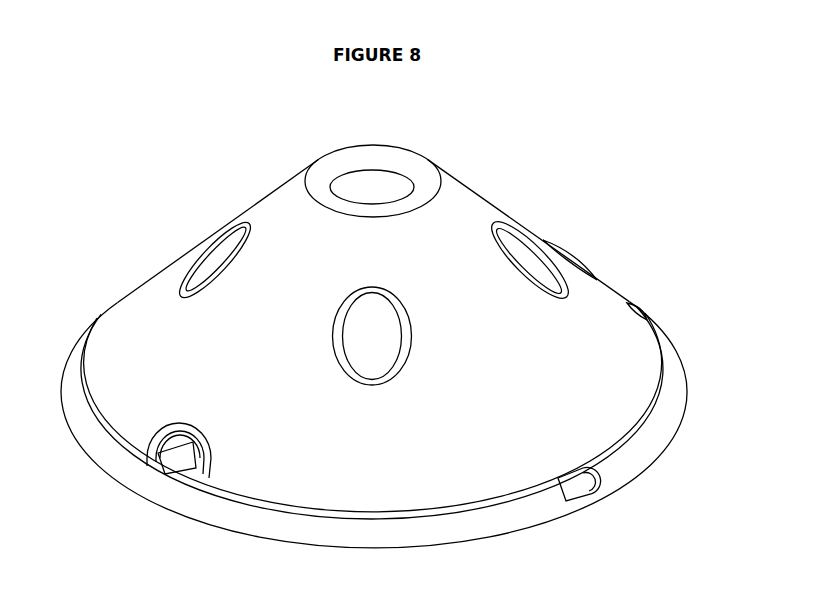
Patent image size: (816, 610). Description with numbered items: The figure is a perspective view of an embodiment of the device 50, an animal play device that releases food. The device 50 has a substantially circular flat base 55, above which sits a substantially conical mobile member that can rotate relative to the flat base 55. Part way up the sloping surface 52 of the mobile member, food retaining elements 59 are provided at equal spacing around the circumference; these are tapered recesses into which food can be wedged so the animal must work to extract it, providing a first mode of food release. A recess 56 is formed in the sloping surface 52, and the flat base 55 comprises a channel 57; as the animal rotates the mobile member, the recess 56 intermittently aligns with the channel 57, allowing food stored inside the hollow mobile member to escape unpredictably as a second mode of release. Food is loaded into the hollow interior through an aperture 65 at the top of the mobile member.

The device 50 is at (392, 240).
The sloping surface 52 is at (582, 266).
The flat base 55 is at (374, 429).
The recess 56 is at (179, 489).
The channel 57 is at (604, 519).
The food retaining element 59 is at (202, 228).
The aperture 65 is at (409, 150).